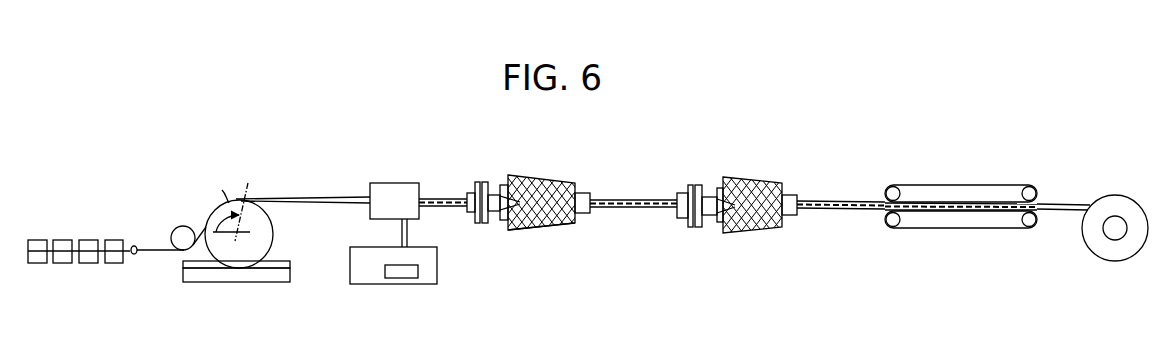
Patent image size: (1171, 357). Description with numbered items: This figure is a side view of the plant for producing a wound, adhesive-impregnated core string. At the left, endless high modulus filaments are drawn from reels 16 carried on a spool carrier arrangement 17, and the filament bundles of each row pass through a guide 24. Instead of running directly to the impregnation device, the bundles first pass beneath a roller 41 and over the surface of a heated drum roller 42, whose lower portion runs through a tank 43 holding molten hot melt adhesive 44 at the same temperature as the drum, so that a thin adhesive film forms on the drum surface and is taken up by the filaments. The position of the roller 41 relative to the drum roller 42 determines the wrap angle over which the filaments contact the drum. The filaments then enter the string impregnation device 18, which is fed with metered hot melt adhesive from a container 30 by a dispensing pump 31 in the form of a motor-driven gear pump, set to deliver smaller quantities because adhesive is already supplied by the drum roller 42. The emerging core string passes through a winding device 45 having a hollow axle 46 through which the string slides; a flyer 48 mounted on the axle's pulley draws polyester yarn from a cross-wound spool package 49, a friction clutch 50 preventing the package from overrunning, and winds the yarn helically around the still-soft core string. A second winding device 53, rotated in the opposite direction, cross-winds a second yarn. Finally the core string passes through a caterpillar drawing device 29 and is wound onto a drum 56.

The reels 16 is at (37, 263).
The spool carrier arrangement 17 is at (79, 231).
The string impregnation device 18 is at (397, 193).
The guide 24 is at (135, 255).
The caterpillar drawing device 29 is at (960, 228).
The container 30 is at (430, 268).
The dispensing pump 31 is at (398, 278).
The roller 41 is at (181, 221).
The drum roller 42 is at (265, 230).
The tank 43 is at (192, 282).
The molten hot melt adhesive 44 is at (265, 276).
The winding device 45 is at (551, 176).
The hollow axle 46 is at (585, 213).
The flyer 48 is at (489, 192).
The cross-wound spool package 49 is at (550, 227).
The friction clutch 50 is at (505, 220).
The second winding device 53 is at (762, 177).
The drum 56 is at (1120, 250).